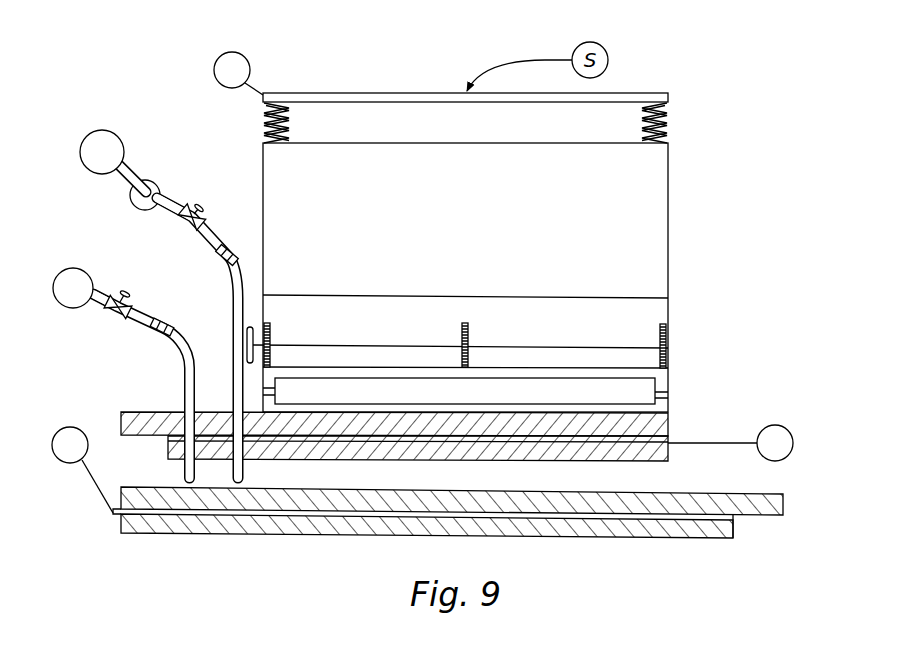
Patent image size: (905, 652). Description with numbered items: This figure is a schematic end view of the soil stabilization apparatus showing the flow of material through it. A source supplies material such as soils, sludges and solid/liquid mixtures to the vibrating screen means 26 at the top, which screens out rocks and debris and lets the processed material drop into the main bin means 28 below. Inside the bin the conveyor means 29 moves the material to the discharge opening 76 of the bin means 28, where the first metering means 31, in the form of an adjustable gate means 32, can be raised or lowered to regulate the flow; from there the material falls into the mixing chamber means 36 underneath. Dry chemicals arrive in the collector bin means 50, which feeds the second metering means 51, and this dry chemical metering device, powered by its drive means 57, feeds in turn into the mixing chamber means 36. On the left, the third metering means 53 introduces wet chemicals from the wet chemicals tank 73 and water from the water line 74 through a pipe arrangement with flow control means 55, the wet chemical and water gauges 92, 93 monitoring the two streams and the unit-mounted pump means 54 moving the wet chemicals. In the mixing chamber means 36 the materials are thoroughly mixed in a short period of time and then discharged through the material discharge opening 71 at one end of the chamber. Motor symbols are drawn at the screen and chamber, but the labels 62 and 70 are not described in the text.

The vibrating screen means 26 is at (380, 92).
The main bin means 28 is at (261, 153).
The conveyor means 29 is at (671, 395).
The first metering means 31 is at (671, 333).
The adjustable gate means 32 is at (541, 296).
The mixing chamber means 36 is at (572, 540).
The collector bin means 50 is at (494, 410).
The second metering means 51 is at (401, 463).
The third metering means 53 is at (148, 148).
The pump means 54 is at (133, 205).
The flow control means 55 is at (201, 209).
The drive means 57 is at (793, 441).
The motor 62 is at (226, 52).
The motor 70 is at (78, 470).
The material discharge opening 71 is at (735, 525).
The wet chemicals tank 73 is at (102, 152).
The water line 74 is at (73, 288).
The discharge opening 76 is at (665, 380).
The wet chemical gauge 92 is at (231, 252).
The water gauge 93 is at (165, 320).